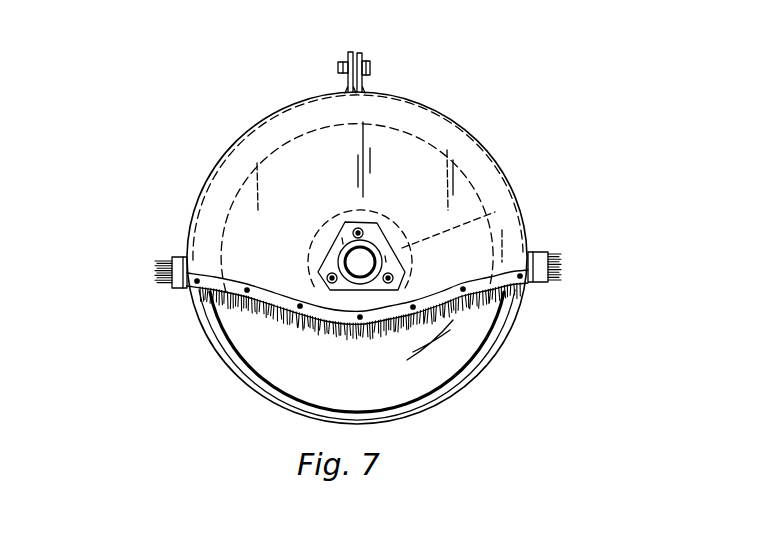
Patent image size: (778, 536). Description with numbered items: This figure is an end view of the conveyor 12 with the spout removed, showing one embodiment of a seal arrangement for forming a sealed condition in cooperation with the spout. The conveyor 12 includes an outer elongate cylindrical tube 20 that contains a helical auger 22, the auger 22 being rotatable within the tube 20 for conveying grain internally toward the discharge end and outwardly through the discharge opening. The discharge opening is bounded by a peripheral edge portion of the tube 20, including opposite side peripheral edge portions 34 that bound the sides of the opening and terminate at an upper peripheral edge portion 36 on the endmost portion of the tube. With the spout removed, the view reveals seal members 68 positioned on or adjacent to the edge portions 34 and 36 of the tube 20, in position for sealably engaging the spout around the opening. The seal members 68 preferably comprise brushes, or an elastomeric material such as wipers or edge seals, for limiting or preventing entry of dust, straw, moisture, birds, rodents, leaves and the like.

The conveyor 12 is at (444, 81).
The outer elongate cylindrical tube 20 is at (448, 117).
The helical auger 22 is at (220, 322).
The side peripheral edge portions 34 is at (185, 258).
The upper peripheral edge portion 36 is at (486, 293).
The seal member 68 is at (156, 268).